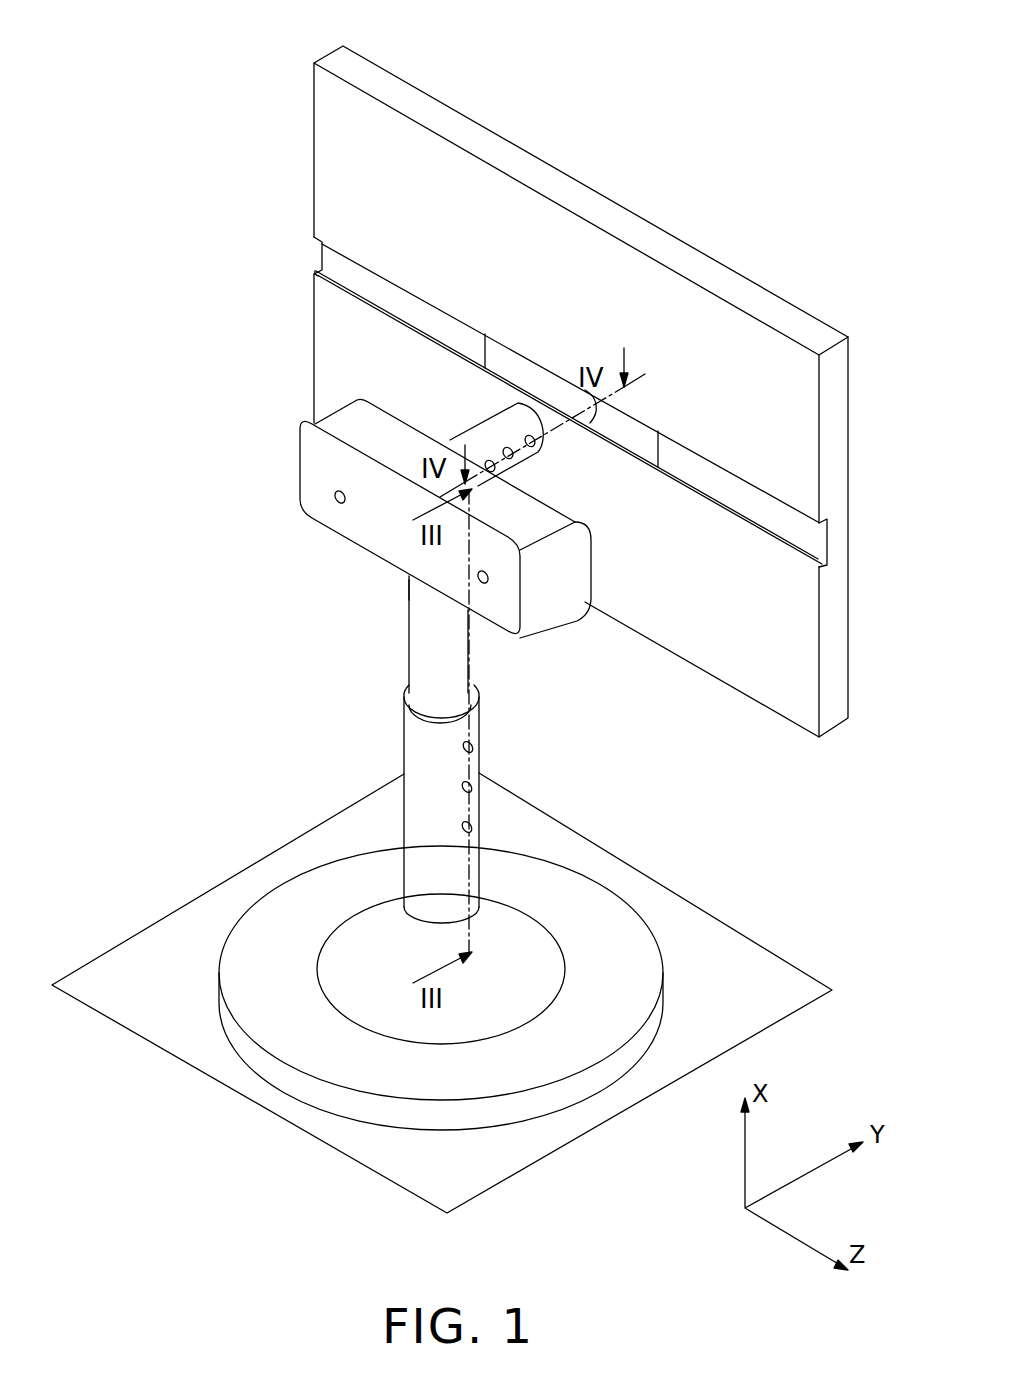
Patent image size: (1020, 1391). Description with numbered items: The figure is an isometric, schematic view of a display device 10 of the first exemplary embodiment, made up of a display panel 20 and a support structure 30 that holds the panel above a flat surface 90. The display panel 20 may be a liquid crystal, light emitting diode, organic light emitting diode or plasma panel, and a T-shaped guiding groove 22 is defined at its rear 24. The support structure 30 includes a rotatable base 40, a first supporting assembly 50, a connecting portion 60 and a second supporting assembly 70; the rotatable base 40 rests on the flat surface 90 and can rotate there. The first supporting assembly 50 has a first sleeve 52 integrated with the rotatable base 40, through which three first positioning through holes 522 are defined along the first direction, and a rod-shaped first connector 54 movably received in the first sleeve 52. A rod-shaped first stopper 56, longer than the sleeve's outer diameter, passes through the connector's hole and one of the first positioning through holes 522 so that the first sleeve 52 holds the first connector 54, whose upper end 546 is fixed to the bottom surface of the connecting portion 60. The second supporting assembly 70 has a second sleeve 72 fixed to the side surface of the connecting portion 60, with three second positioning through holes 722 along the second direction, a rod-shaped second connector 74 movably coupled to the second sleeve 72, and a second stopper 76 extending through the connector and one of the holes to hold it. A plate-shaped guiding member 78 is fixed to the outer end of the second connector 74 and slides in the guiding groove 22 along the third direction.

The display device 10 is at (152, 49).
The display panel 20 is at (595, 205).
The guiding groove 22 is at (762, 513).
The rear 24 is at (762, 357).
The support structure 30 is at (145, 350).
The rotatable base 40 is at (298, 912).
The first supporting assembly 50 is at (205, 645).
The first sleeve 52 is at (420, 762).
The first positioning through holes 522 is at (470, 823).
The first connector 54 is at (430, 664).
The end portion of inner rod 546 is at (415, 597).
The first stopper 56 is at (472, 742).
The connecting portion 60 is at (372, 517).
The second supporting assembly 70 is at (205, 300).
The second sleeve 72 is at (493, 433).
The second positioning through holes 722 is at (534, 445).
The second connector 74 is at (485, 335).
The second stopper 76 is at (540, 450).
The guiding member 78 is at (637, 447).
The flat surface 90 is at (705, 945).